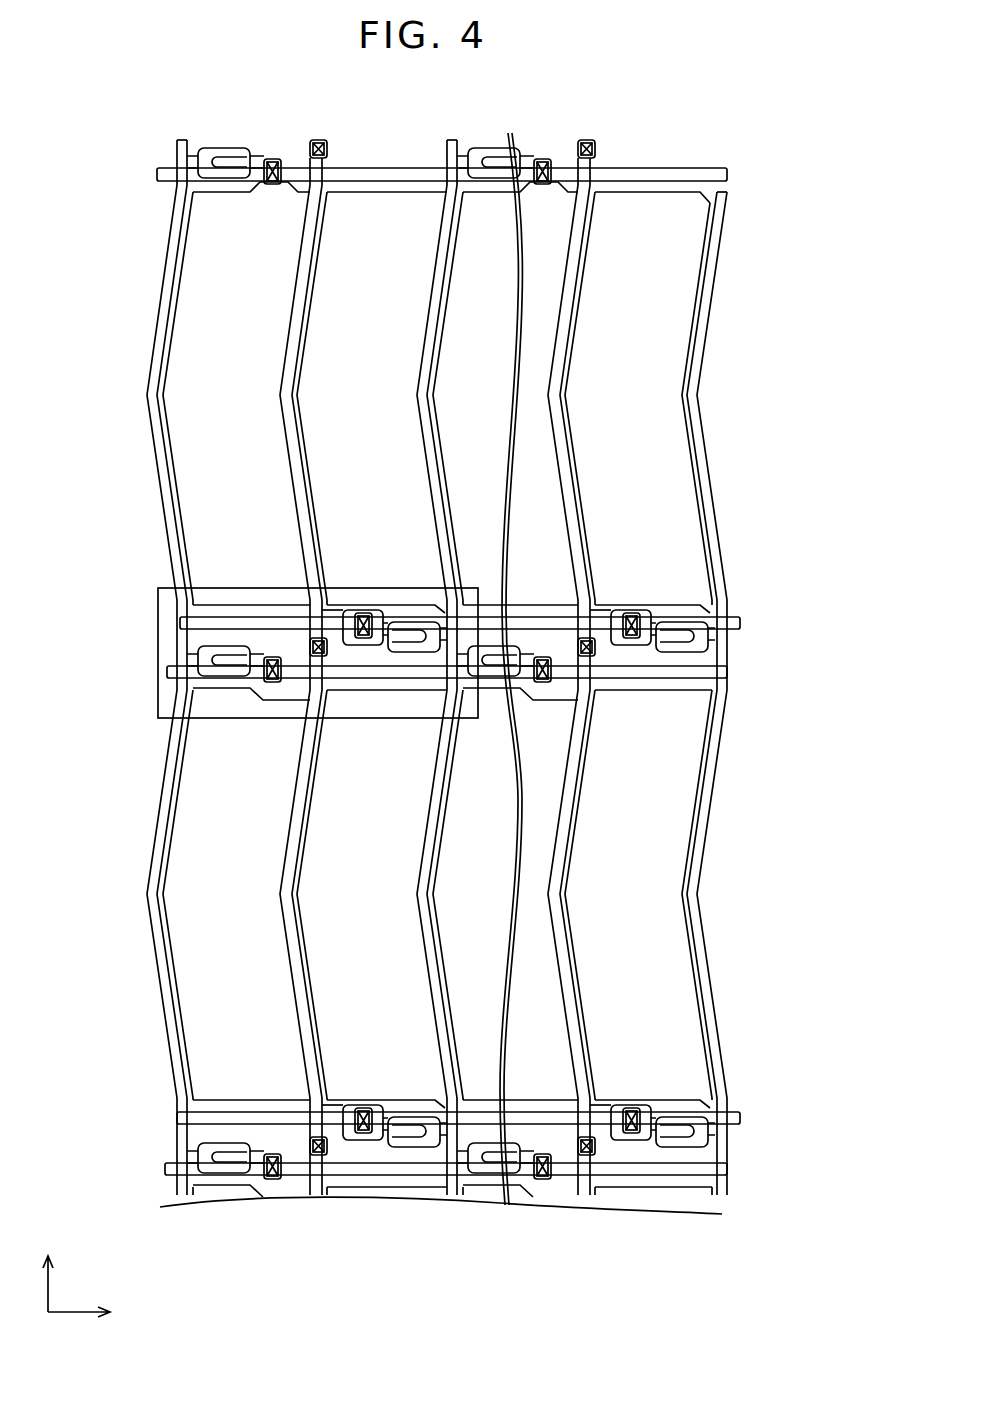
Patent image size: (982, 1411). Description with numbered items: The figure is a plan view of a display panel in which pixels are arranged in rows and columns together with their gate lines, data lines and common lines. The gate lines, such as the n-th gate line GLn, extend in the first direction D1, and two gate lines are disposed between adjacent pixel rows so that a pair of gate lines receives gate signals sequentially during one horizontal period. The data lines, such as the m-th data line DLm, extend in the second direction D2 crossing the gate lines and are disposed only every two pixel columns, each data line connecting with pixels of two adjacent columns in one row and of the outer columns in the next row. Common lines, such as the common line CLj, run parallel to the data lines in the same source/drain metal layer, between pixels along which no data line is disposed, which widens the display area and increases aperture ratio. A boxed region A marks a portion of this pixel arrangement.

The m-th data line DLm is at (180, 654).
The common line CLj is at (304, 654).
The n-th gate line GLn is at (422, 621).
The enlarged region A is at (318, 640).
The first direction D1 is at (100, 1313).
The second direction D2 is at (53, 1266).